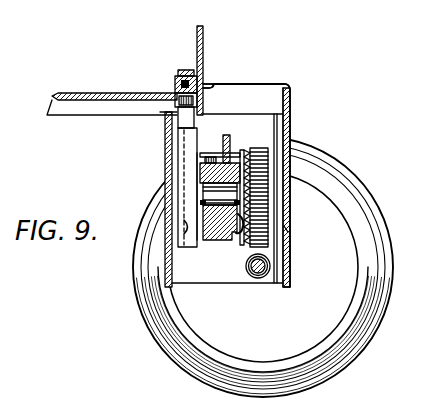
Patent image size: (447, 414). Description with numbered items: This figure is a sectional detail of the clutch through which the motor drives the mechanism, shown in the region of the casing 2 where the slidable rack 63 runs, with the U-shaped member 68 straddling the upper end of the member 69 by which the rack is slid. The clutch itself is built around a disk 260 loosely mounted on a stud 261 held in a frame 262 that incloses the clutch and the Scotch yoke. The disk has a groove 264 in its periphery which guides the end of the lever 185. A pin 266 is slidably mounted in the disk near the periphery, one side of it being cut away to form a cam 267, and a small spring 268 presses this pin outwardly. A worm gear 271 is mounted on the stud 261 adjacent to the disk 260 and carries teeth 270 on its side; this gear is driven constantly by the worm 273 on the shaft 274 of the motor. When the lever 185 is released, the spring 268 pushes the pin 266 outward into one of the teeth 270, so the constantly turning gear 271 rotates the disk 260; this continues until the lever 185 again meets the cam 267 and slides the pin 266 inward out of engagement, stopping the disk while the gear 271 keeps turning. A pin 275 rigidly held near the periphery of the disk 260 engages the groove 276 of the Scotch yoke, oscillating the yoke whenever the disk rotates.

The casing 2 is at (197, 52).
The slidable rack 63 is at (203, 77).
The U-shaped member 68 is at (174, 90).
The member 69 is at (185, 113).
The lever 185 is at (226, 141).
The disk 260 is at (215, 189).
The stud 261 is at (221, 198).
The frame 262 is at (290, 156).
The groove 264 is at (228, 242).
The pin 266 is at (257, 149).
The cam 267 is at (219, 152).
The spring 268 is at (207, 160).
The teeth 270 is at (249, 243).
The worm gear 271 is at (286, 230).
The worm 273 is at (267, 272).
The shaft 274 is at (259, 278).
The pin 275 is at (199, 156).
The groove 276 is at (182, 235).